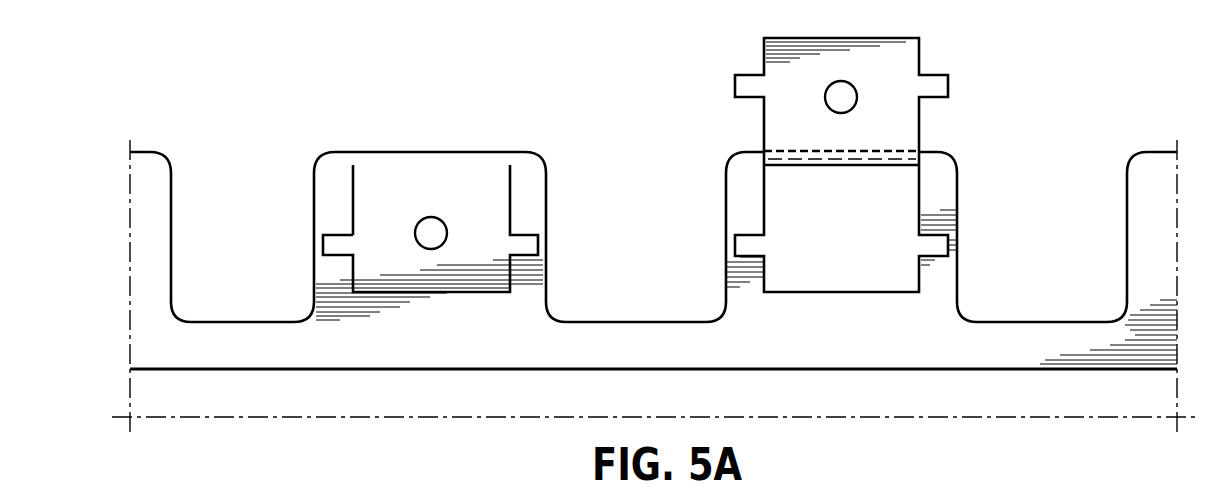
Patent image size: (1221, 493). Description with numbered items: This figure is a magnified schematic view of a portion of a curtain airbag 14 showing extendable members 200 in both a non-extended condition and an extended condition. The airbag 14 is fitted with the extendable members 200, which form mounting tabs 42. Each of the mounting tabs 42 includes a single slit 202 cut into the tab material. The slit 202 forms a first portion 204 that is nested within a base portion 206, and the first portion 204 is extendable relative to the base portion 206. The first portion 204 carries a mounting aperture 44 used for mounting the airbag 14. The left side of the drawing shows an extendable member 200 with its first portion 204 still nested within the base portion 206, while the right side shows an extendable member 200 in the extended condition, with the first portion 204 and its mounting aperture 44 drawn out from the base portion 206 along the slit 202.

The airbag 14 is at (237, 85).
The mounting tabs 42 is at (328, 101).
The extendable members 200 is at (368, 88).
The slit 202 is at (353, 209).
The mounting aperture 44 is at (433, 230).
The first portion 204 is at (482, 215).
The base portion 206 is at (523, 213).